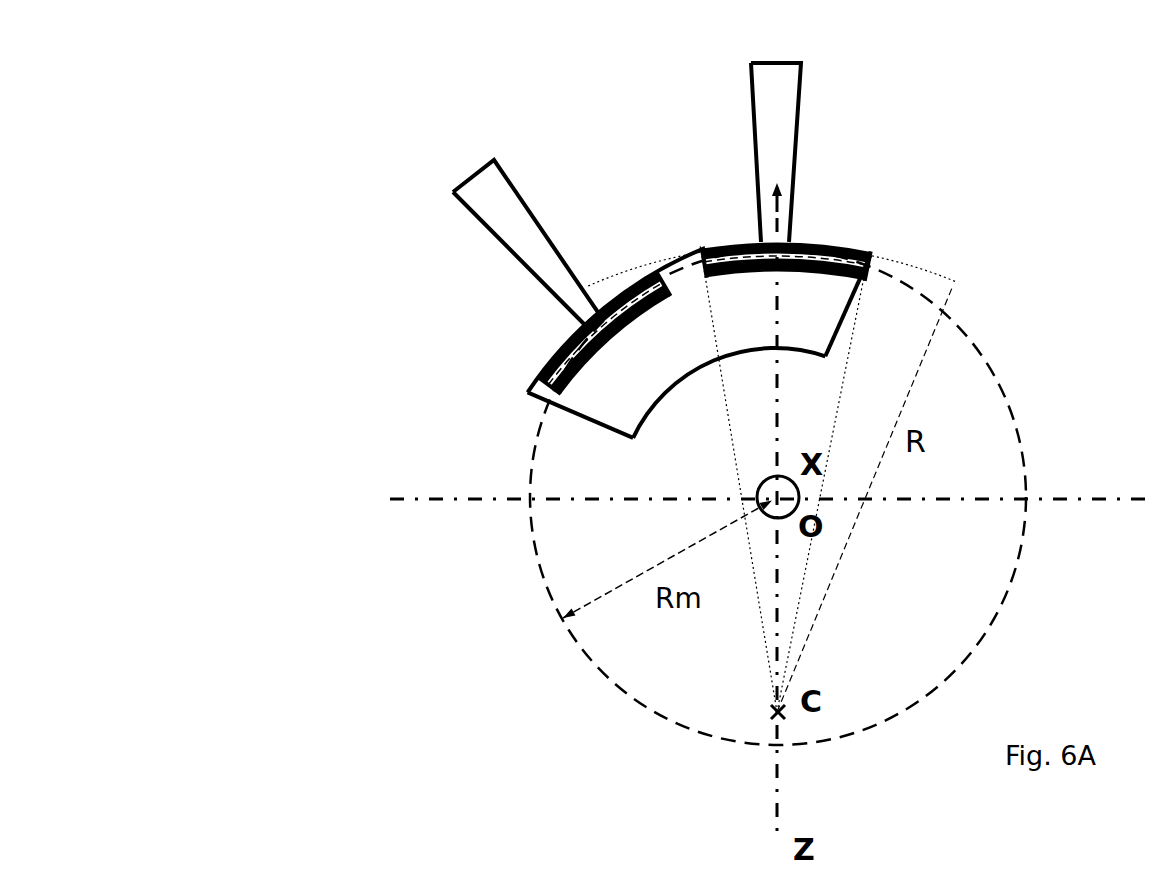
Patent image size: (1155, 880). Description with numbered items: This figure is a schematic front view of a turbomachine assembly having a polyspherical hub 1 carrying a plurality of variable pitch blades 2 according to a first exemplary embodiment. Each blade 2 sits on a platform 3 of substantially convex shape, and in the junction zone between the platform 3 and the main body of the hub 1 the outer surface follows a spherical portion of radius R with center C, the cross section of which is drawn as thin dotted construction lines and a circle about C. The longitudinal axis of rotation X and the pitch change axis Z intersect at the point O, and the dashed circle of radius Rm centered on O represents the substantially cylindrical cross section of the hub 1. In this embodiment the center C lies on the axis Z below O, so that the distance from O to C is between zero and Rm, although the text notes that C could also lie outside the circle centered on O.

The hub 1 is at (855, 297).
The ultrasonic horn 2 is at (498, 187).
The platform 3 is at (557, 355).